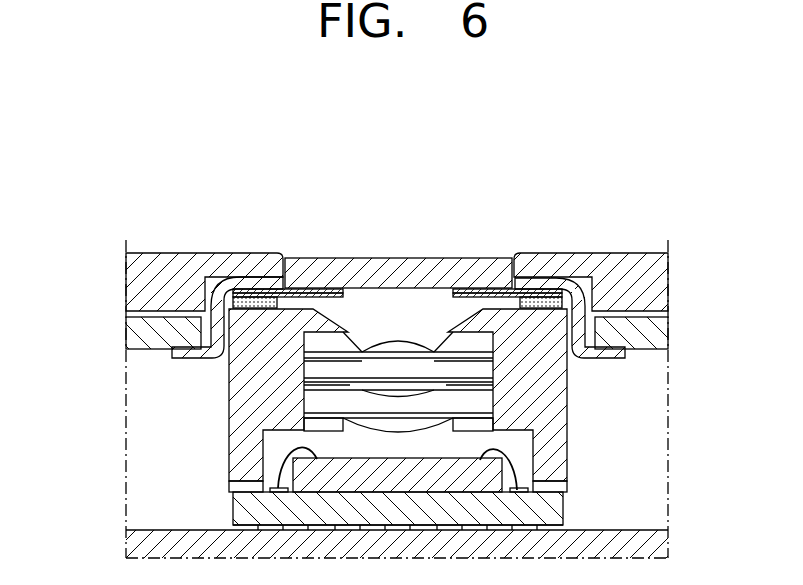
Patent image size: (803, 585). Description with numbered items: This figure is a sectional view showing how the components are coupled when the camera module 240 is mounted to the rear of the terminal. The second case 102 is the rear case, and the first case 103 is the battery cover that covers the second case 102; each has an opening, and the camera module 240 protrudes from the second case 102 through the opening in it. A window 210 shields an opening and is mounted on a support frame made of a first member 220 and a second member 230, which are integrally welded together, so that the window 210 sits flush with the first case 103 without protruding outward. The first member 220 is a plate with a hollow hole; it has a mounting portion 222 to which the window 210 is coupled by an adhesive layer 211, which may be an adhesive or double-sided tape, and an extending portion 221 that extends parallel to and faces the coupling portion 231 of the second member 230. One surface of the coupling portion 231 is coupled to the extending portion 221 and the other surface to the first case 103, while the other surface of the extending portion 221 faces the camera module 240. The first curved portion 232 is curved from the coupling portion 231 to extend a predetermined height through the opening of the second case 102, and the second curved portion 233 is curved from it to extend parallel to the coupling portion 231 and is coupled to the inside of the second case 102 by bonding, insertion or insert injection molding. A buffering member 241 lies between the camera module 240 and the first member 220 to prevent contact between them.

The second case 102 is at (662, 332).
The first case 103 is at (662, 285).
The window 210 is at (412, 258).
The adhesive layer 211 is at (488, 290).
The first member 220 is at (288, 221).
The extending portion 221 is at (262, 290).
The mounting portion 222 is at (310, 292).
The second member 230 is at (312, 319).
The coupling portion 231 is at (247, 280).
The first curved portion 232 is at (213, 322).
The second curved portion 233 is at (172, 353).
The camera module 240 is at (230, 446).
The buffering member 241 is at (540, 300).